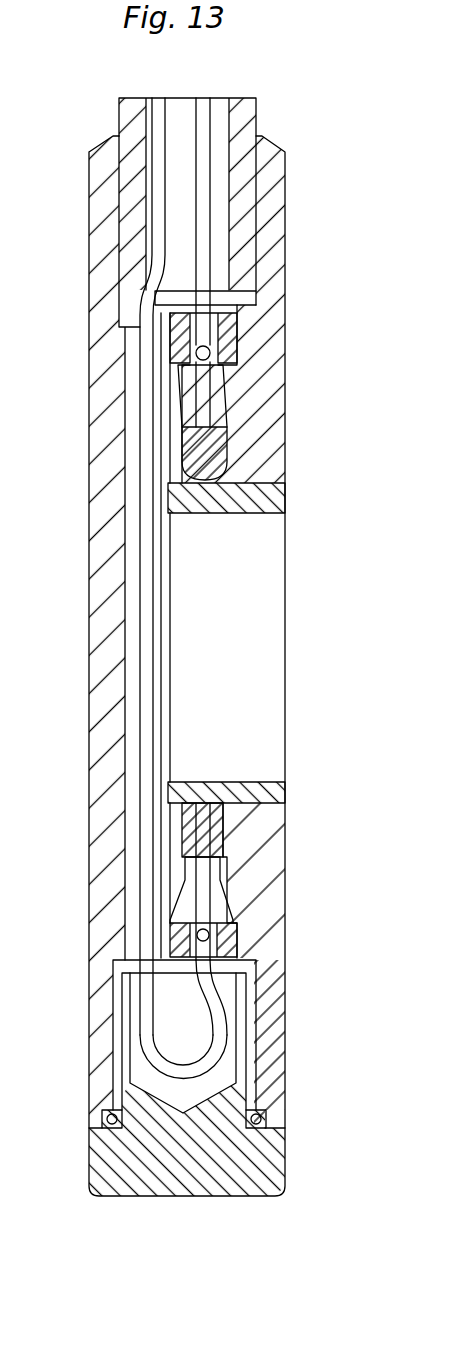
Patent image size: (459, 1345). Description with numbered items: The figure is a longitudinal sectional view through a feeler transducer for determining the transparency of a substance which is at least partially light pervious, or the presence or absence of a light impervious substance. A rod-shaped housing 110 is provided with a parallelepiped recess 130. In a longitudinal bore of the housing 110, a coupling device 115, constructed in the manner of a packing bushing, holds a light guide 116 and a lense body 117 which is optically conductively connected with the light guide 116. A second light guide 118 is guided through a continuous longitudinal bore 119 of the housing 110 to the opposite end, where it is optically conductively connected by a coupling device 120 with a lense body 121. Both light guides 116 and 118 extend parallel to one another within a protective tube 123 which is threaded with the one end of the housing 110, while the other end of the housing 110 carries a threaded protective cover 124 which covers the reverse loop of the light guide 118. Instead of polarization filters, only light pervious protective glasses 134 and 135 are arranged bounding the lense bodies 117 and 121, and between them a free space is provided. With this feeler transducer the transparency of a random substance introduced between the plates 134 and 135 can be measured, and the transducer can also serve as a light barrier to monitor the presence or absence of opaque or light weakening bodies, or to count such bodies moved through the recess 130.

The housing 110 is at (107, 340).
The coupling device 115 is at (193, 392).
The light guide 116 is at (208, 130).
The lense body 117 is at (190, 455).
The second light guide 118 is at (140, 970).
The continuous longitudinal bore 119 is at (132, 553).
The coupling device 120 is at (183, 900).
The lense body 121 is at (252, 793).
The protective tube 123 is at (138, 122).
The threaded protective cover 124 is at (120, 1163).
The parallelepiped recess 130 is at (170, 640).
The protective glass 134 is at (253, 500).
The protective glass 135 is at (207, 782).